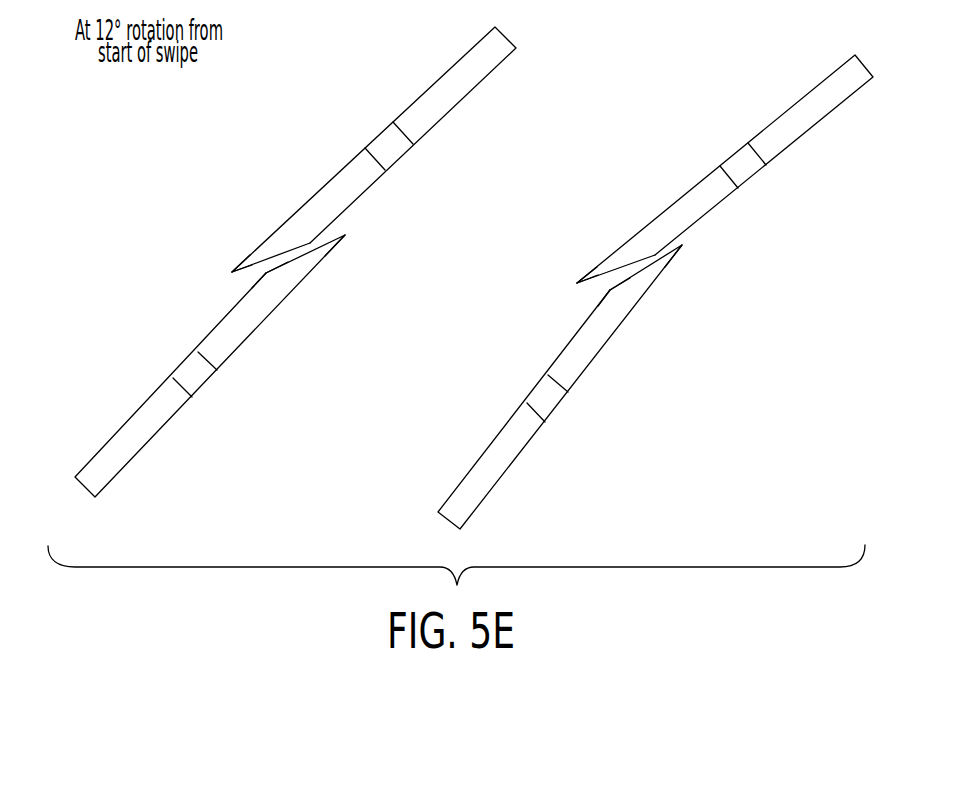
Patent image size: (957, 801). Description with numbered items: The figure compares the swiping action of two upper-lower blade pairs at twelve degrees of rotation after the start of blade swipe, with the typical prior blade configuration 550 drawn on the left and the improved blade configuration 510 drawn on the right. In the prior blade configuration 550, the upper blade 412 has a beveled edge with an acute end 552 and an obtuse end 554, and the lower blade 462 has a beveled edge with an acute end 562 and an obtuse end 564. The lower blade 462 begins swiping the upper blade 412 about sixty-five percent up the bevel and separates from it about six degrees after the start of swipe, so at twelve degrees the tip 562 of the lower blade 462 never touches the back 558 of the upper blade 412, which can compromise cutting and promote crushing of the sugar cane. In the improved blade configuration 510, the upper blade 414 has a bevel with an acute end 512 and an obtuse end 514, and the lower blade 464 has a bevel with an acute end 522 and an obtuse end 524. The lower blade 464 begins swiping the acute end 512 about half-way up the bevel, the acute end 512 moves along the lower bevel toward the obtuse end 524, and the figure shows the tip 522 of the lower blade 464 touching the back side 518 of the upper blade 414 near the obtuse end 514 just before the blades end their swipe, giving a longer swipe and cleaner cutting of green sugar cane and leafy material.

The prior blade configuration 550 is at (242, 200).
The acute end 552 is at (231, 271).
The obtuse end 554 is at (310, 243).
The back 558 is at (373, 172).
The upper blade 412 is at (388, 145).
The lower blade 462 is at (198, 358).
The acute end 562 is at (345, 238).
The obtuse end 564 is at (266, 273).
The improved blade configuration 510 is at (513, 216).
The acute end 512 is at (578, 282).
The obtuse end 514 is at (655, 255).
The back side 518 is at (730, 192).
The upper blade 414 is at (738, 162).
The lower blade 464 is at (547, 393).
The acute end 522 is at (682, 248).
The obtuse end 524 is at (610, 290).